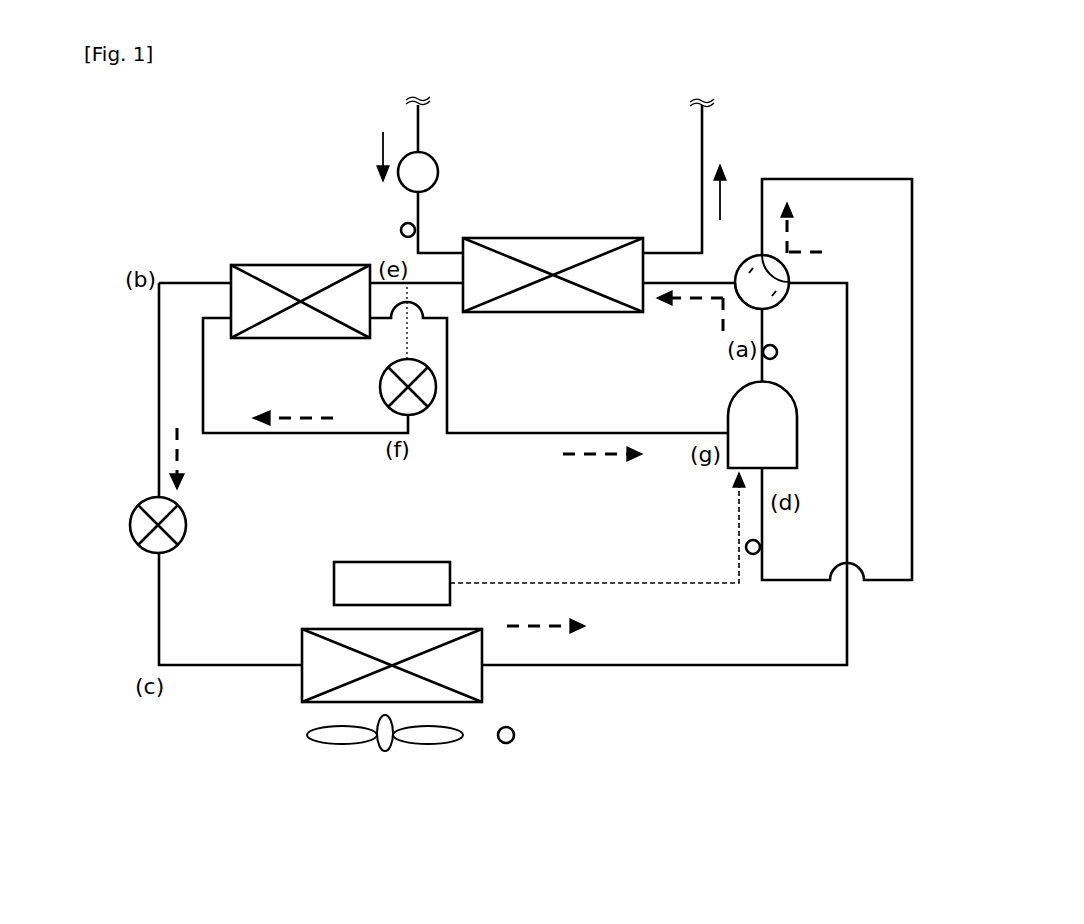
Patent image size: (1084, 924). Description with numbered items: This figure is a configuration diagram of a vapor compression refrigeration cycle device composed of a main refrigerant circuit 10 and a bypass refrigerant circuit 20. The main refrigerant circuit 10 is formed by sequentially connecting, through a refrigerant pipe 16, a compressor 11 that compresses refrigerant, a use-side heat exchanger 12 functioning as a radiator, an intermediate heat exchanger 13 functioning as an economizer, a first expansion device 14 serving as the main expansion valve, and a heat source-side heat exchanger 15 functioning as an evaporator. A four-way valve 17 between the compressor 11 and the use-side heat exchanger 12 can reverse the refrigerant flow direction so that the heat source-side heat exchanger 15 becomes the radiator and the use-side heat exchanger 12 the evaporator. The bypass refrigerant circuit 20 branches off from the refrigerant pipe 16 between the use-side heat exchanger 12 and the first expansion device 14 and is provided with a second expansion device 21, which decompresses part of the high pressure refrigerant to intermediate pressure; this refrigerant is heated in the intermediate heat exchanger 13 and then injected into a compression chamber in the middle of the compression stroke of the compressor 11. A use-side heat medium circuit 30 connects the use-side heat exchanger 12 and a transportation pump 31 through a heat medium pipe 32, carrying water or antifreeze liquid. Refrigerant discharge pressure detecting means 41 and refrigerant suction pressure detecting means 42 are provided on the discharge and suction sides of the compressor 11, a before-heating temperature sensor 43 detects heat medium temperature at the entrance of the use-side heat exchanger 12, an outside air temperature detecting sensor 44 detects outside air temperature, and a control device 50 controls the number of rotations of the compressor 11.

The main refrigerant circuit 10 is at (206, 678).
The compressor 11 is at (797, 450).
The use-side heat exchanger 12 is at (574, 242).
The intermediate heat exchanger 13 is at (292, 265).
The first expansion device 14 is at (133, 512).
The heat source-side heat exchanger 15 is at (303, 685).
The refrigerant pipe 16 is at (180, 283).
The four-way valve 17 is at (757, 256).
The bypass refrigerant circuit 20 is at (318, 438).
The second expansion device 21 is at (425, 408).
The use-side heat medium circuit 30 is at (718, 130).
The transportation pump 31 is at (440, 163).
The heat medium pipe 32 is at (437, 248).
The refrigerant discharge pressure detecting means 41 is at (778, 358).
The refrigerant suction pressure detecting means 42 is at (752, 557).
The before-heating temperature sensor 43 is at (401, 223).
The outside air temperature detecting sensor 44 is at (506, 744).
The control device 50 is at (450, 578).